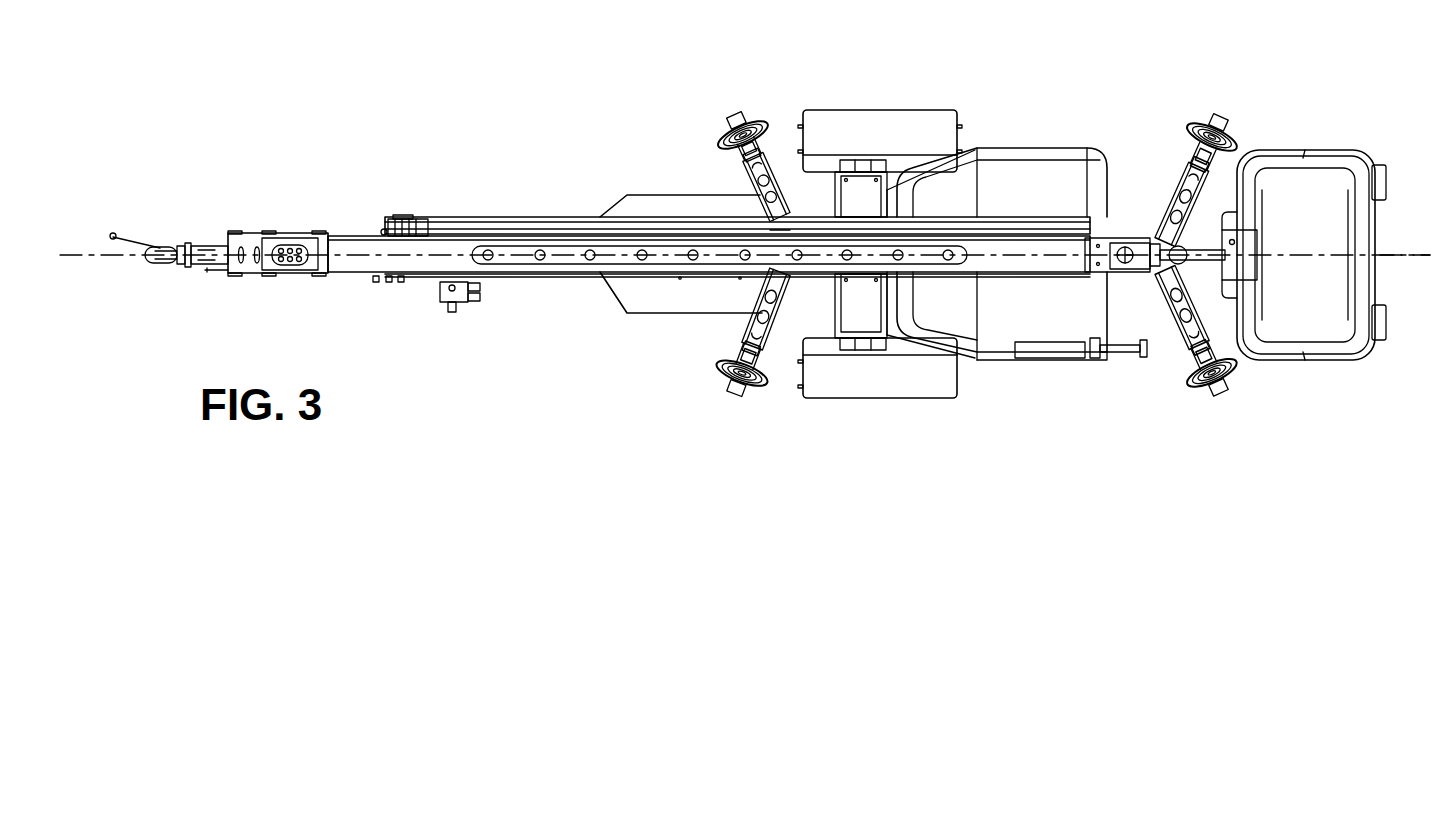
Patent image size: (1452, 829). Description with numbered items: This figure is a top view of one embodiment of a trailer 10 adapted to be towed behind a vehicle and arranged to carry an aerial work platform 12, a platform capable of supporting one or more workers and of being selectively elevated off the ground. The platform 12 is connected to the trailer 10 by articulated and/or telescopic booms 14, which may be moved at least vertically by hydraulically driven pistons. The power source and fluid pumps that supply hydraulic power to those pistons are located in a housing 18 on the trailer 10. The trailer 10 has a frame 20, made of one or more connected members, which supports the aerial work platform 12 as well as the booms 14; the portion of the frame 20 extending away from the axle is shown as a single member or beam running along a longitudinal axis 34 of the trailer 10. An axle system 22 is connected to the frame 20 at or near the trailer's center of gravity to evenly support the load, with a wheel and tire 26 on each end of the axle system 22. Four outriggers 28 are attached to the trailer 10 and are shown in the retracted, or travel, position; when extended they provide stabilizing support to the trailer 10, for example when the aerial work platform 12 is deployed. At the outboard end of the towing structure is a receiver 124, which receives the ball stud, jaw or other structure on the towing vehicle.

The trailer 10 is at (980, 102).
The aerial work platform 12 is at (1316, 150).
The booms 14 is at (515, 248).
The housing 18 is at (1058, 160).
The frame 20 is at (645, 322).
The axle system 22 is at (795, 160).
The tire 26 is at (877, 128).
The outriggers 28 is at (735, 122).
The longitudinal axis 34 is at (1418, 252).
The receiver 124 is at (184, 244).